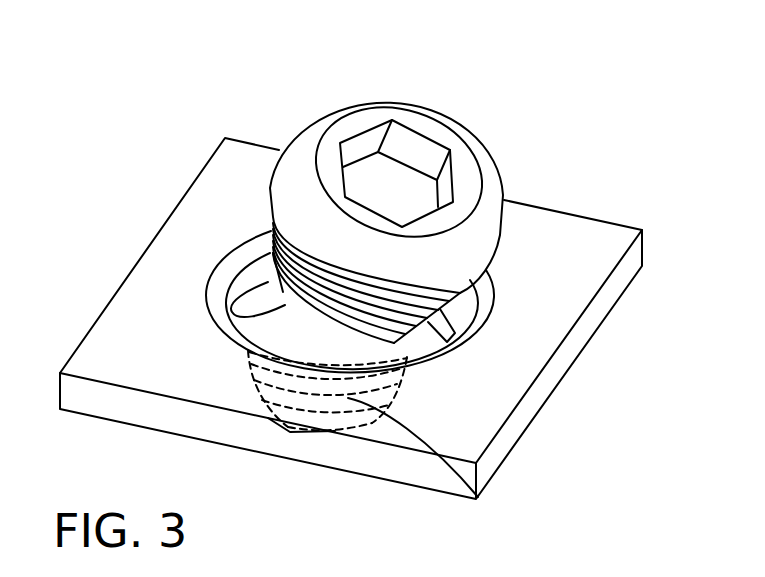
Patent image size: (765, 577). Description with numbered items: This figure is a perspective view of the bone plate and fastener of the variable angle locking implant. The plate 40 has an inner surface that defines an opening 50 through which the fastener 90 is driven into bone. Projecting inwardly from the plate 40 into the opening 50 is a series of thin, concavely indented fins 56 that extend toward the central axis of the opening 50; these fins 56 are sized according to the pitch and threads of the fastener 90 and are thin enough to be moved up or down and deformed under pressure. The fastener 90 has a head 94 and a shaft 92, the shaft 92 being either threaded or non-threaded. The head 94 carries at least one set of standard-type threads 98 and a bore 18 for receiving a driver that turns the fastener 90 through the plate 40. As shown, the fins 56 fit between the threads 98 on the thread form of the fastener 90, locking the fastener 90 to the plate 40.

The plate 40 is at (151, 362).
The head 94 is at (305, 142).
The bore 18 is at (408, 178).
The fastener 90 is at (495, 272).
The opening 50 is at (253, 238).
The fins 56 is at (242, 292).
The threads 98 is at (408, 341).
The shaft 92 is at (477, 497).